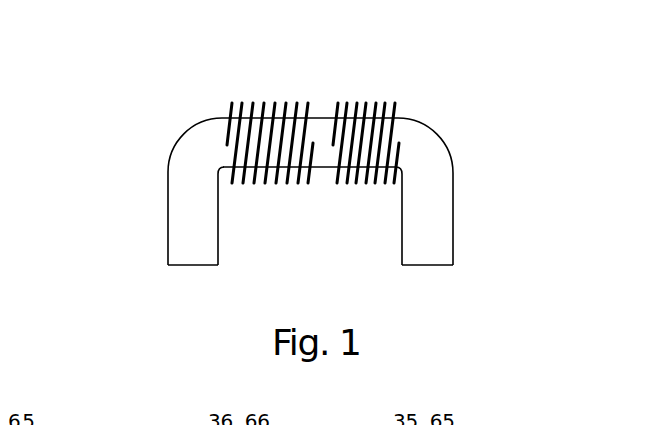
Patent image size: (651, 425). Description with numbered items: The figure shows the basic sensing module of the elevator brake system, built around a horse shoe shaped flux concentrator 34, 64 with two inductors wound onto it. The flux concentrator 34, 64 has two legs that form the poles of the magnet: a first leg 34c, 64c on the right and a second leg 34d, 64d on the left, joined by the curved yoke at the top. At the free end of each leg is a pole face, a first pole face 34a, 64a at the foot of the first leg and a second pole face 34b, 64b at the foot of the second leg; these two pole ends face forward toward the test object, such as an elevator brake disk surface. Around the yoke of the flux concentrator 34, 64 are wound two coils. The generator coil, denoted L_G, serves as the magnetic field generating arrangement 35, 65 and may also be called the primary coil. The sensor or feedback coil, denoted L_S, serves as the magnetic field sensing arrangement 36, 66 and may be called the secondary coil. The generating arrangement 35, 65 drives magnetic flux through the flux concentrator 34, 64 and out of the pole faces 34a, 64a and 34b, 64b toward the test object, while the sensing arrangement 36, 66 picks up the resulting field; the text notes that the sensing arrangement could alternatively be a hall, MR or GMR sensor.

The flux concentrator 34 is at (312, 201).
The flux concentrator 64 is at (312, 201).
The first pole face 34a is at (468, 298).
The first pole face 64a is at (430, 265).
The second pole face 34b is at (166, 297).
The second pole face 64b is at (193, 265).
The first leg 34c is at (504, 219).
The first leg 64c is at (440, 248).
The second leg 34d is at (118, 218).
The second leg 64d is at (186, 209).
The magnetic field generating arrangement 35 is at (141, 142).
The magnetic field generating arrangement 65 is at (245, 118).
The magnetic field sensing arrangement 36 is at (495, 143).
The magnetic field sensing arrangement 66 is at (398, 118).